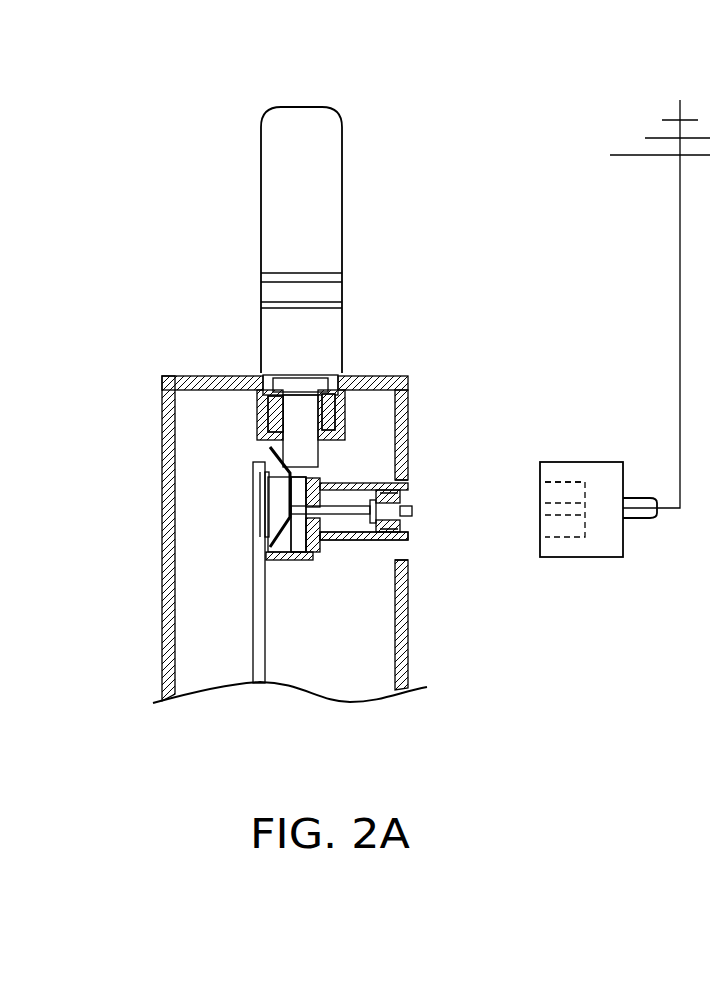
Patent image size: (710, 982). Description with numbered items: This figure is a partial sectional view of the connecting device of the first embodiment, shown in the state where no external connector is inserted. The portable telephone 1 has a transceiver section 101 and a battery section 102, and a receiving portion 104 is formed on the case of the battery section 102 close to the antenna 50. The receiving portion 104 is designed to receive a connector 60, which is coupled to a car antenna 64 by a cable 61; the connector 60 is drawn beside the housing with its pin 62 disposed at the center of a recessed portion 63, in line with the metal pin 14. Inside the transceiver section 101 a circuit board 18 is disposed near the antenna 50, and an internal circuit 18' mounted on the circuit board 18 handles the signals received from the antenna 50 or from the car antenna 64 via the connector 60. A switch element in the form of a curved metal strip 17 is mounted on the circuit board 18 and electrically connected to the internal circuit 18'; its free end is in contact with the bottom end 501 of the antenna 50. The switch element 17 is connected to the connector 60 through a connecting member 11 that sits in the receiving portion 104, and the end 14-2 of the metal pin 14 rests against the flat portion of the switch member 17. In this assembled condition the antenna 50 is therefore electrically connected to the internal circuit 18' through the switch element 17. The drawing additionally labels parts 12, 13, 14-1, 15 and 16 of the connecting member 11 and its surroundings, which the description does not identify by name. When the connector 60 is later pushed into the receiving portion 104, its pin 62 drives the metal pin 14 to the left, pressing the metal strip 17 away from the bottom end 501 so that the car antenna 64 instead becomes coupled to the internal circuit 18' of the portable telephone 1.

The portable telephone 1 is at (115, 123).
The connecting member 11 is at (351, 541).
The partition plate 12 is at (408, 537).
The slide rod 13 is at (410, 508).
The metal pin 14 is at (347, 500).
The holder right portion 14-1 is at (408, 520).
The end of the metal pin 14-2 is at (291, 505).
The bottom lip 15 is at (266, 556).
The contact frame 16 is at (270, 522).
The curved metal strip 17 is at (287, 495).
The circuit board 18 is at (184, 572).
The internal circuit 18' is at (189, 483).
The antenna 50 is at (263, 111).
The bottom end of the antenna 501 is at (325, 452).
The connector 60 is at (596, 462).
The cable 61 is at (641, 498).
The pin 62 is at (568, 513).
The recessed portion 63 is at (560, 482).
The car antenna 64 is at (640, 135).
The transceiver section 101 is at (163, 377).
The battery section 102 is at (400, 377).
The receiving portion 104 is at (408, 484).